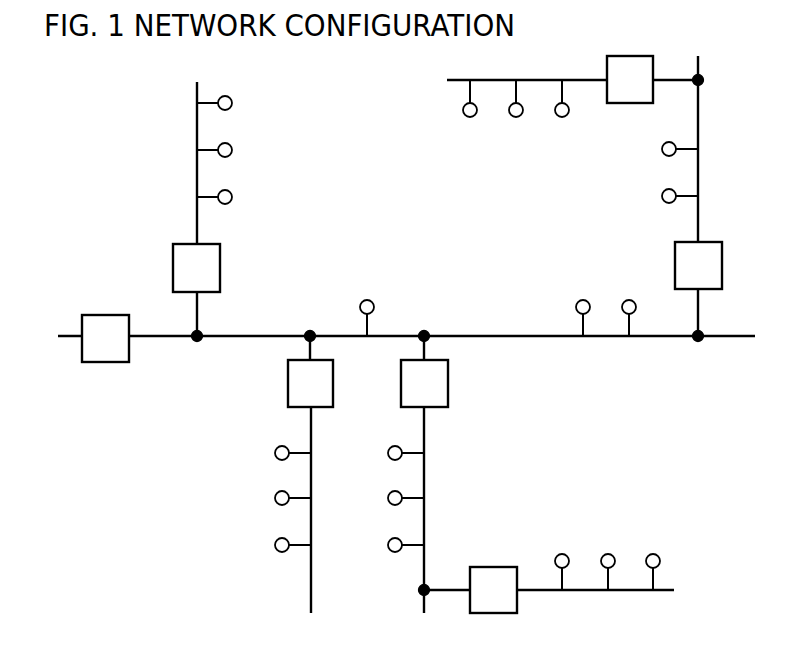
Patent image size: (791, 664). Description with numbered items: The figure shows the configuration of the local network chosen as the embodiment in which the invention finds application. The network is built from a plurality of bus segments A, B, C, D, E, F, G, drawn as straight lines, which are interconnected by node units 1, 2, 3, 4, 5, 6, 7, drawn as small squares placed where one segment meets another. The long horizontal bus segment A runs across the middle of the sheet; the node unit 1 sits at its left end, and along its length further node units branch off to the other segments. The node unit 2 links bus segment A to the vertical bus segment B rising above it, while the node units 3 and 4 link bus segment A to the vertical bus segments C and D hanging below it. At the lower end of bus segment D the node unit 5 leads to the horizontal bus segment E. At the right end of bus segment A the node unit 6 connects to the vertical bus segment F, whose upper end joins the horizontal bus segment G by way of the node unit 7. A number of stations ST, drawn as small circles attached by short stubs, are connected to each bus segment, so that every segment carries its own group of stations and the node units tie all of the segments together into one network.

The node unit 1 is at (105, 338).
The node unit 2 is at (196, 268).
The node unit 3 is at (310, 371).
The node unit 4 is at (424, 371).
The node unit 5 is at (493, 590).
The node unit 6 is at (698, 265).
The node unit 7 is at (630, 79).
The bus segment A is at (406, 332).
The bus segment B is at (204, 209).
The bus segment C is at (302, 510).
The bus segment D is at (417, 510).
The bus segment E is at (549, 586).
The bus segment F is at (687, 196).
The bus segment G is at (575, 87).
The station ST is at (233, 101).